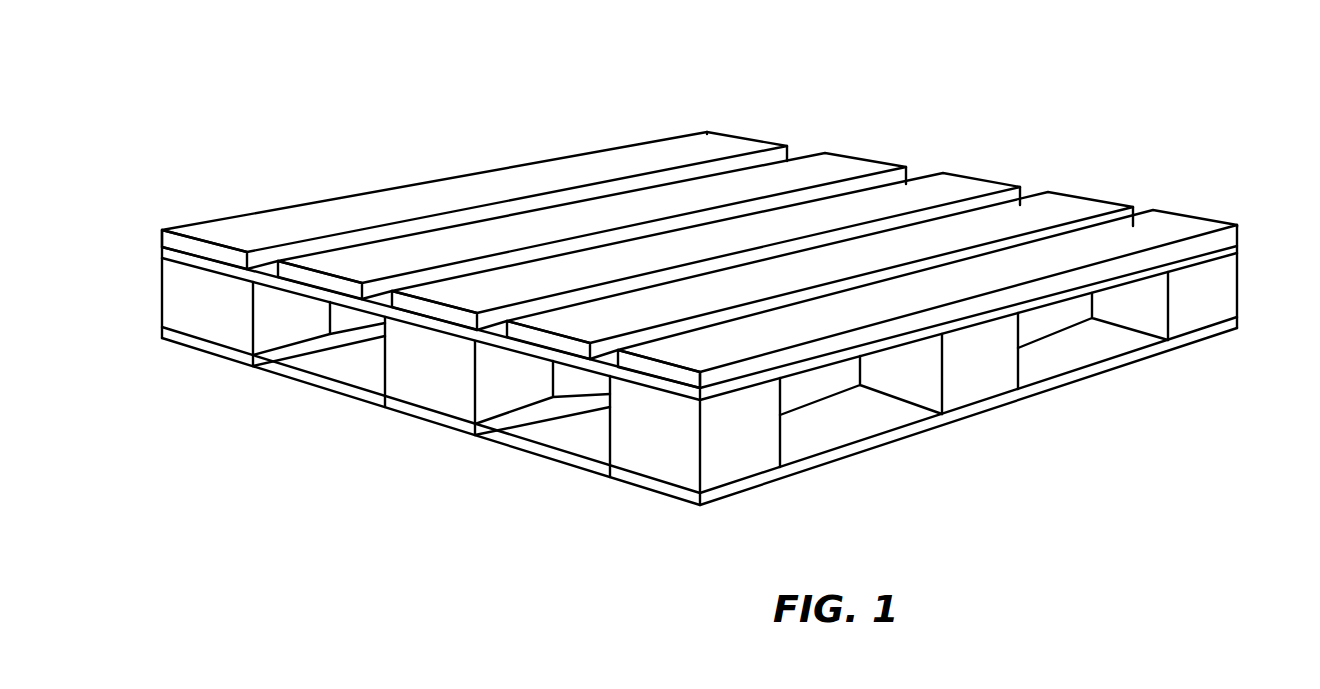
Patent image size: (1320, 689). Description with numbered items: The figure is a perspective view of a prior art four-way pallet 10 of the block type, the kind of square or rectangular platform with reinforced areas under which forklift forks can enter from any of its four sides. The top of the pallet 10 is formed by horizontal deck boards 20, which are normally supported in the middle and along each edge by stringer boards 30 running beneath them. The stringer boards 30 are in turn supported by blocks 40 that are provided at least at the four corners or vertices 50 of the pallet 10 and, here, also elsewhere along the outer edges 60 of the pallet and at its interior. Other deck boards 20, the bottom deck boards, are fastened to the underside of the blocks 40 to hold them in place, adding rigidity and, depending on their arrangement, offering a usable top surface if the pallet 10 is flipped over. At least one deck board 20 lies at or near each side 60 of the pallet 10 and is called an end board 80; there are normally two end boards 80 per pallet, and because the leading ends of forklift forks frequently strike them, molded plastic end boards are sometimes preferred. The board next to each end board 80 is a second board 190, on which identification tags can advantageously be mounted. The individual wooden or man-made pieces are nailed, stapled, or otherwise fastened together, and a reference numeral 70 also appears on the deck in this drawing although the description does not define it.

The pallet 10 is at (286, 134).
The deck board 20 is at (947, 187).
The stringer board 30 is at (188, 258).
The block 40 is at (302, 320).
The corner 50 is at (162, 299).
The outer edge 60 is at (458, 178).
The top deck board 70 is at (368, 190).
The end board 80 is at (707, 148).
The second board 190 is at (843, 165).